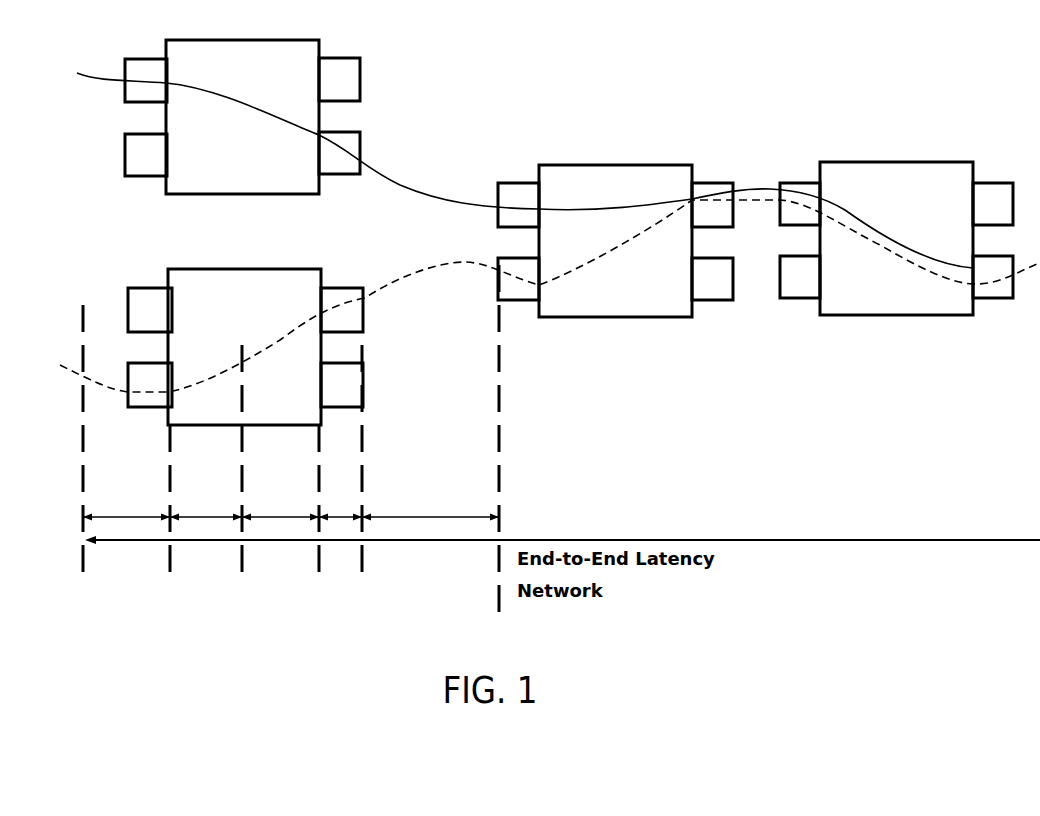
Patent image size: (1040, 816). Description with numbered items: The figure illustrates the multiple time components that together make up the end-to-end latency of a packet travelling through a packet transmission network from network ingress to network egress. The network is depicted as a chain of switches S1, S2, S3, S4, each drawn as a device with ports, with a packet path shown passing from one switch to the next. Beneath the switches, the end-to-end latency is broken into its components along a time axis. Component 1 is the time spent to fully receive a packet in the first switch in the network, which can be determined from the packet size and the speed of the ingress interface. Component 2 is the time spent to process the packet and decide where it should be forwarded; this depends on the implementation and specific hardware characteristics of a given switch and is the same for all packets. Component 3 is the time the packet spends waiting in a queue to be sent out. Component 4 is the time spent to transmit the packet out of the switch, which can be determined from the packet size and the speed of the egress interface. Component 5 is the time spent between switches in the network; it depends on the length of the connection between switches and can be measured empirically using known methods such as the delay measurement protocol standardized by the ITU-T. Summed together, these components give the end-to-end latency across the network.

The first switch S1 is at (242, 117).
The second switch S2 is at (245, 347).
The third switch S3 is at (615, 241).
The fourth switch S4 is at (896, 238).
The packet reception time component 1 is at (126, 496).
The packet processing time component 2 is at (206, 496).
The queue waiting time component 3 is at (280, 496).
The packet transmission time component 4 is at (340, 496).
The inter-switch propagation time component 5 is at (430, 496).